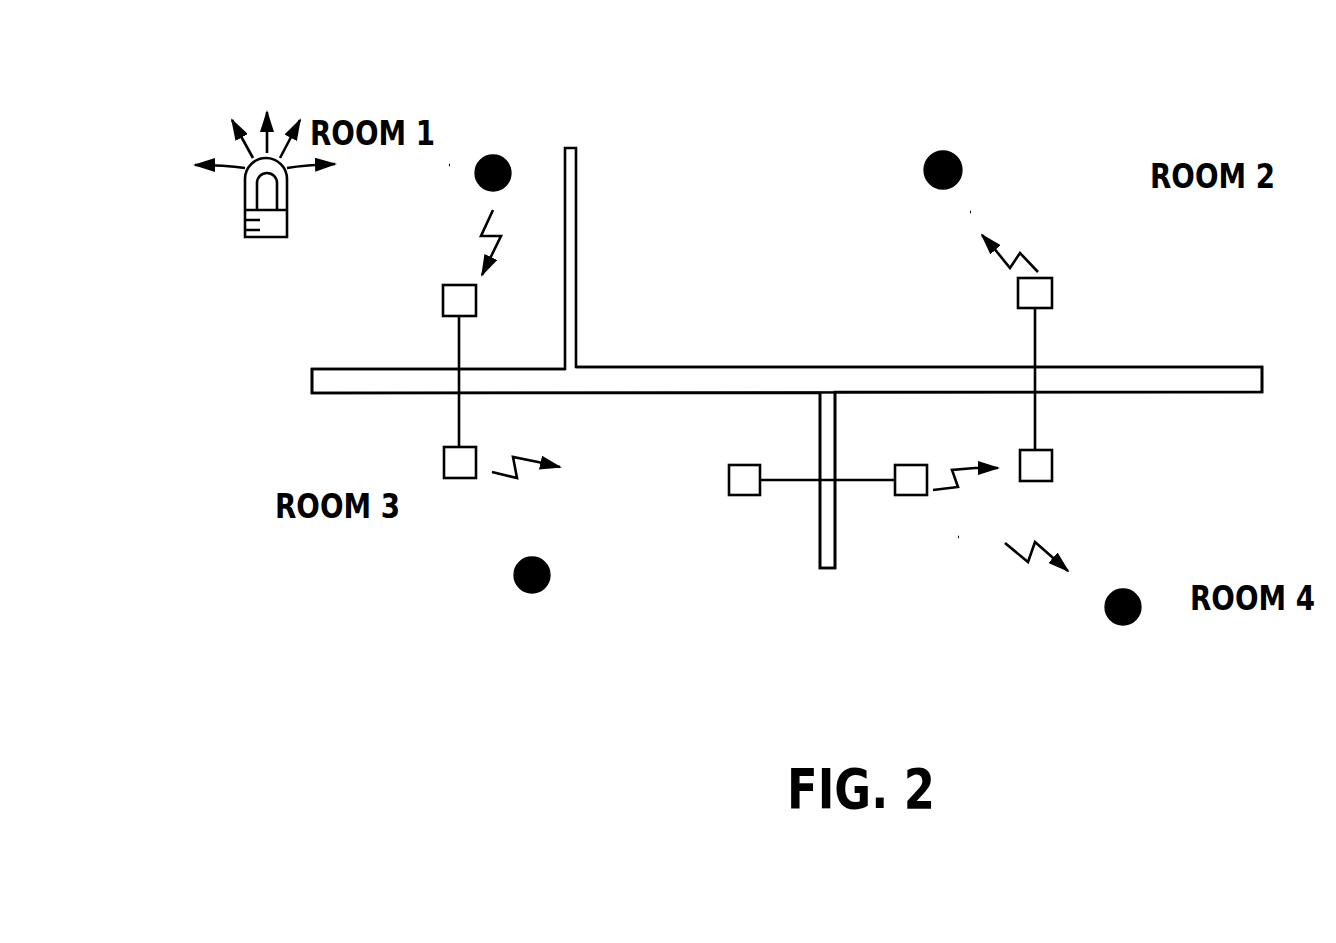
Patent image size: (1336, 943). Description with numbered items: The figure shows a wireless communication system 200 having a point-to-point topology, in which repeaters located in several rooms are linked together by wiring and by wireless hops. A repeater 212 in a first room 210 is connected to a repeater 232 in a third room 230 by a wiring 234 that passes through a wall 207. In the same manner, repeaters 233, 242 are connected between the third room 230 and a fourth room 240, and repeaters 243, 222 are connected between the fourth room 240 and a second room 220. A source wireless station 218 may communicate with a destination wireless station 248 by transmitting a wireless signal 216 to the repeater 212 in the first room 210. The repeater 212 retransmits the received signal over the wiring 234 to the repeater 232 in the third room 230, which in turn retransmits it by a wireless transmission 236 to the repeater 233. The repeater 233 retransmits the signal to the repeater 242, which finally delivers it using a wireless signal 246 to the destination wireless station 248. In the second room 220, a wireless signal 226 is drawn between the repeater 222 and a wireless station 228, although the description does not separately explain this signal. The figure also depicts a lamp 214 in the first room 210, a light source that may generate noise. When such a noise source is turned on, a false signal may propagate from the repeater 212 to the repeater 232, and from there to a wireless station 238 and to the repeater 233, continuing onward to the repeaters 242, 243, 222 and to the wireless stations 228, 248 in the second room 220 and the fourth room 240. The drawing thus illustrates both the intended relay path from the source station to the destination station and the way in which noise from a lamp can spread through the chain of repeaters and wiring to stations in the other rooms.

The wireless communication system 200 is at (963, 135).
The wall 207 is at (578, 293).
The first room 210 is at (449, 165).
The repeater 212 is at (443, 290).
The lamp 214 is at (275, 216).
The wireless signal 216 is at (500, 245).
The source wireless station 218 is at (505, 157).
The second room 220 is at (970, 212).
The repeater 222 is at (1053, 288).
The transmitted signal 226 is at (1032, 263).
The wireless station 228 is at (925, 165).
The third room 230 is at (657, 565).
The repeater 232 is at (458, 478).
The repeater 233 is at (740, 497).
The wiring 234 is at (459, 421).
The wireless transmission 236 is at (515, 478).
The wireless station 238 is at (515, 588).
The fourth room 240 is at (958, 537).
The repeater 242 is at (917, 463).
The repeater 243 is at (1054, 463).
The wireless signal 246 is at (1037, 545).
The destination wireless station 248 is at (1143, 612).